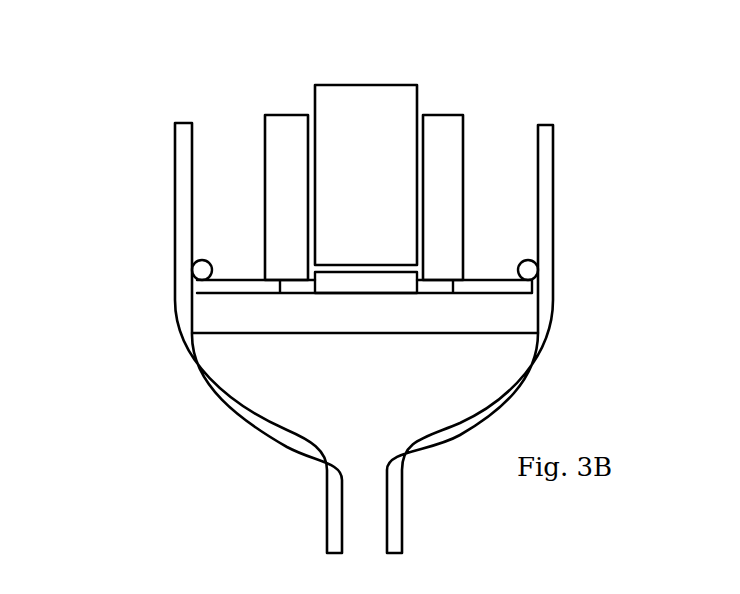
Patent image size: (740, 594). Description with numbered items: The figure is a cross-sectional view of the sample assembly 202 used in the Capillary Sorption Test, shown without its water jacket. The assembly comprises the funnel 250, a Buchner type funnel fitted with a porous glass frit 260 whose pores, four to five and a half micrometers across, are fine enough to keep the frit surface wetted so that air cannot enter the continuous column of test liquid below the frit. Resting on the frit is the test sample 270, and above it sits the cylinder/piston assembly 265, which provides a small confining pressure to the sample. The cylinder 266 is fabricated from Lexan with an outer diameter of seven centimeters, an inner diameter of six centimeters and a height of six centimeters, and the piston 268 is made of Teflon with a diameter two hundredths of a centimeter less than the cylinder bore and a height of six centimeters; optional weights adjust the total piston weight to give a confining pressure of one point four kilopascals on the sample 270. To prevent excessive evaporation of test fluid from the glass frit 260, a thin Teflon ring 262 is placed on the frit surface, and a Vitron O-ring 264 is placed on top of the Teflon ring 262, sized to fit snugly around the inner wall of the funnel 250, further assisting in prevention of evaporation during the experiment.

The sample assembly 202 is at (138, 238).
The funnel 250 is at (540, 358).
The glass frit 260 is at (520, 312).
The Teflon ring 262 is at (497, 283).
The O-ring 264 is at (527, 272).
The cylinder/piston assembly 265 is at (256, 125).
The cylinder 266 is at (445, 128).
The piston 268 is at (367, 105).
The test sample 270 is at (353, 282).